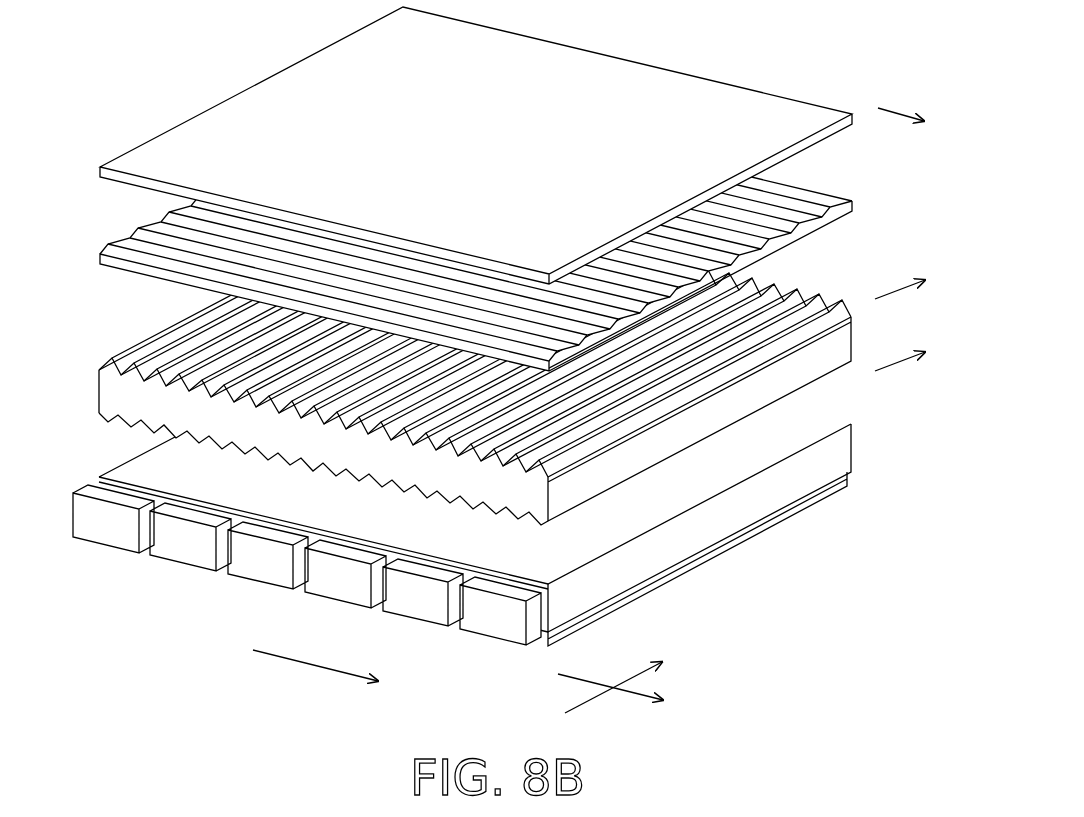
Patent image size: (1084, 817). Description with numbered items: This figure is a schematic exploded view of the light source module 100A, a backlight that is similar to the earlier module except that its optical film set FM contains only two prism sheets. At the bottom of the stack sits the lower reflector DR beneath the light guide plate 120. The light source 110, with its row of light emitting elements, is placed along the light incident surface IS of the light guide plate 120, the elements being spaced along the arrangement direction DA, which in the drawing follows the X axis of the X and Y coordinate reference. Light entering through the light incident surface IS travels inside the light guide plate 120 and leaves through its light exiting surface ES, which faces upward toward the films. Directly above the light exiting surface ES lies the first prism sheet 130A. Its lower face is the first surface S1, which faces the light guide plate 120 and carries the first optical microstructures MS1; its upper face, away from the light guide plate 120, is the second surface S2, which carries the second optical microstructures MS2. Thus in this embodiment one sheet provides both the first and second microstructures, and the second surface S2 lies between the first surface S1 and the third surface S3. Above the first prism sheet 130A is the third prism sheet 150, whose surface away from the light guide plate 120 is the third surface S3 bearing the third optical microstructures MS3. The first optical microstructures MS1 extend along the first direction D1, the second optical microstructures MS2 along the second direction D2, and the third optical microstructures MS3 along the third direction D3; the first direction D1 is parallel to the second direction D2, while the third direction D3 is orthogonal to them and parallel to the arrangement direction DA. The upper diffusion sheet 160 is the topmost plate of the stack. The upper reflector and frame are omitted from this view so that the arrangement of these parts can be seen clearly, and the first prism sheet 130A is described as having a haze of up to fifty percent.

The light source module 100A is at (503, 365).
The light source 110 is at (106, 564).
The light guide plate 120 is at (508, 553).
The first prism sheet 130A is at (490, 411).
The third prism sheet 150 is at (476, 232).
The upper diffusion sheet 160 is at (792, 111).
The optical film set FM is at (490, 316).
The first optical microstructures MS1 is at (124, 431).
The second optical microstructures MS2 is at (157, 329).
The third optical microstructures MS3 is at (137, 223).
The first surface S1 is at (567, 509).
The second surface S2 is at (786, 299).
The third surface S3 is at (774, 206).
The light exiting surface ES is at (798, 429).
The light incident surface IS is at (547, 626).
The lower reflector DR is at (758, 548).
The arrangement direction DA is at (315, 659).
The first direction D1 is at (918, 351).
The second direction D2 is at (919, 278).
The third direction D3 is at (921, 125).
The X-axis direction X is at (625, 697).
The Y-axis direction Y is at (622, 675).